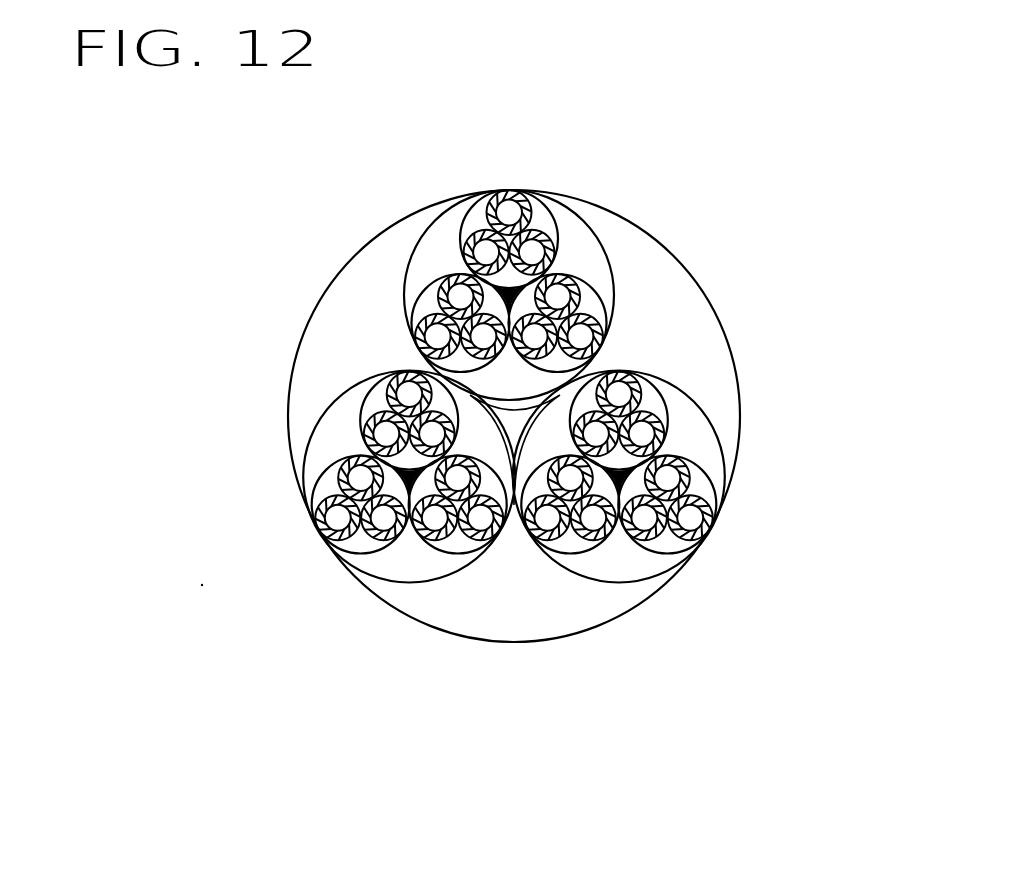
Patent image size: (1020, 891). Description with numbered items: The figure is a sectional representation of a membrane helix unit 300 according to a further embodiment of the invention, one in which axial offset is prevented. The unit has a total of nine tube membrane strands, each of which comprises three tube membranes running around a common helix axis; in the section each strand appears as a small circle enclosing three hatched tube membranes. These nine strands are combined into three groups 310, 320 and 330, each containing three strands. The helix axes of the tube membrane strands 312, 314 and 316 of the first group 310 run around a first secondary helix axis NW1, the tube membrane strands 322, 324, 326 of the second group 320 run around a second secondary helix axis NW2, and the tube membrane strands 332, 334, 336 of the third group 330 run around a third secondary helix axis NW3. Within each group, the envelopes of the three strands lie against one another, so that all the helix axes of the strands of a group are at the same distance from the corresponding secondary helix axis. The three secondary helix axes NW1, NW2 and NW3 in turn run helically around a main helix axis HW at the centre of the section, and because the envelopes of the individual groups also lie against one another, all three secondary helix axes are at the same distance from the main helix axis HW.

The cable 300 is at (746, 186).
The first group 310 is at (638, 594).
The tube membrane strand 312 is at (715, 460).
The tube membrane strand 314 is at (660, 386).
The tube membrane strand 316 is at (583, 550).
The second group 320 is at (426, 610).
The tube membrane strand 322 is at (455, 555).
The tube membrane strand 324 is at (350, 563).
The tube membrane strand 326 is at (345, 385).
The third group 330 is at (626, 236).
The tube membrane strand 332 is at (590, 282).
The tube membrane strand 334 is at (407, 303).
The tube membrane strand 336 is at (460, 232).
The first secondary helix axis NW1 is at (688, 540).
The second secondary helix axis NW2 is at (348, 465).
The third secondary helix axis NW3 is at (540, 188).
The main helix axis HW is at (509, 500).